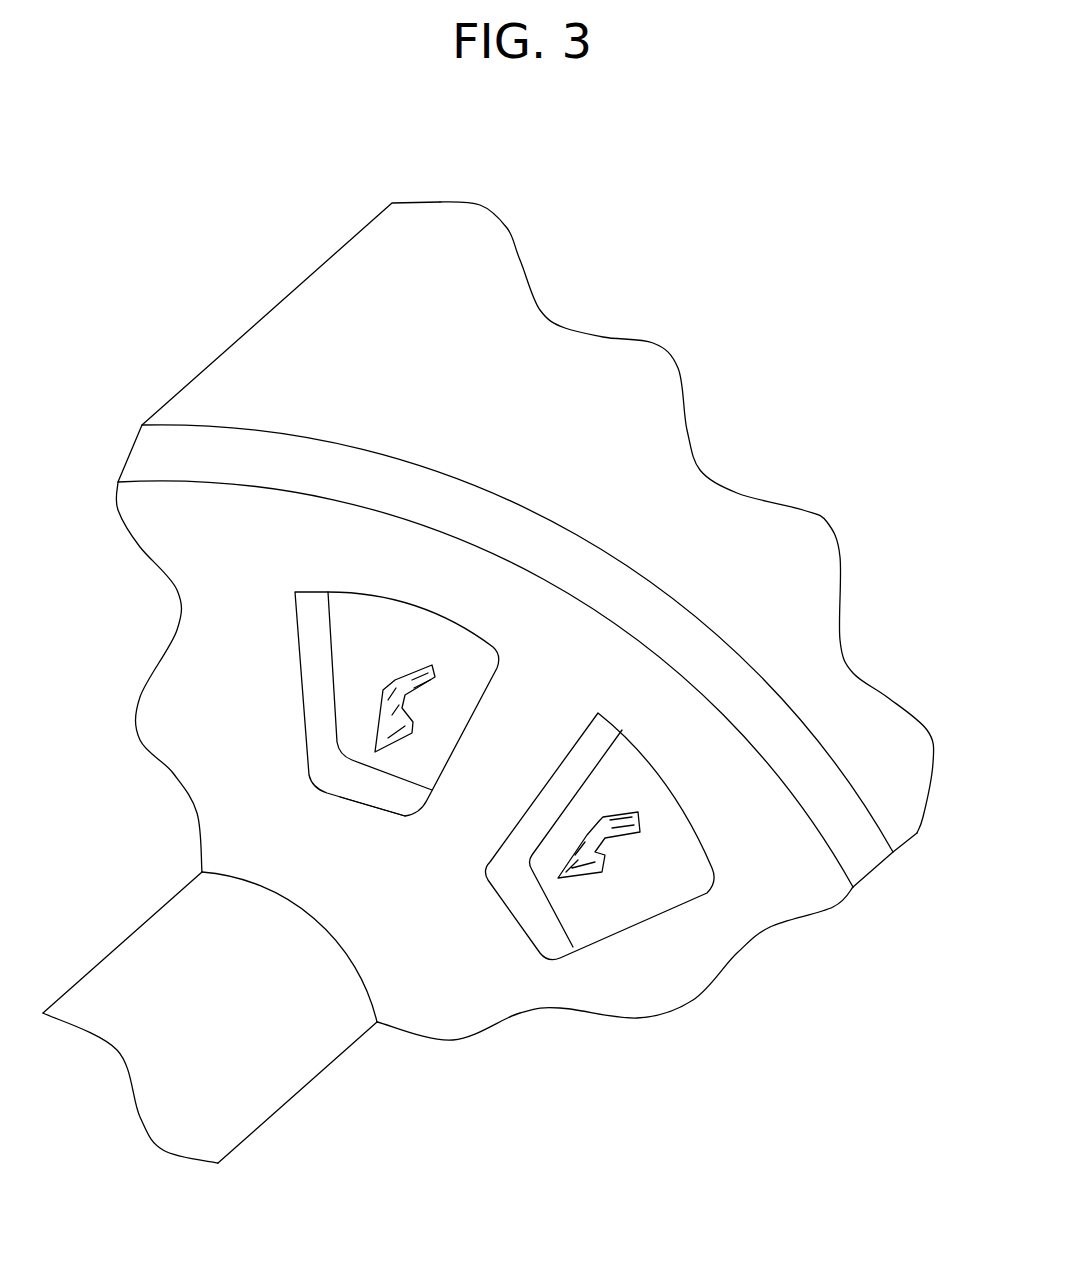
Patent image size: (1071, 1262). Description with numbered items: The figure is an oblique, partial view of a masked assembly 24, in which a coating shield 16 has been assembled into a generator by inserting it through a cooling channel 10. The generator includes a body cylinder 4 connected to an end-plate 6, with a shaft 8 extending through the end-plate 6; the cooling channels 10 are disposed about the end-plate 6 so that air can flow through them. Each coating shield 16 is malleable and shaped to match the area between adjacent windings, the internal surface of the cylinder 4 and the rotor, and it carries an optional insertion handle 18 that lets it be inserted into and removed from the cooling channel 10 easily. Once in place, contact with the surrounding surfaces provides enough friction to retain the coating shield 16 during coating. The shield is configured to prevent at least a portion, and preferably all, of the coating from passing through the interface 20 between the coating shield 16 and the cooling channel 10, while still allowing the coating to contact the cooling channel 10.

The body cylinder 4 is at (528, 421).
The end-plate 6 is at (545, 662).
The shaft 8 is at (260, 964).
The cooling channel 10 is at (383, 825).
The coating shield 16 is at (448, 670).
The insertion handle 18 is at (410, 705).
The interface 20 is at (327, 662).
The masked assembly 24 is at (307, 210).